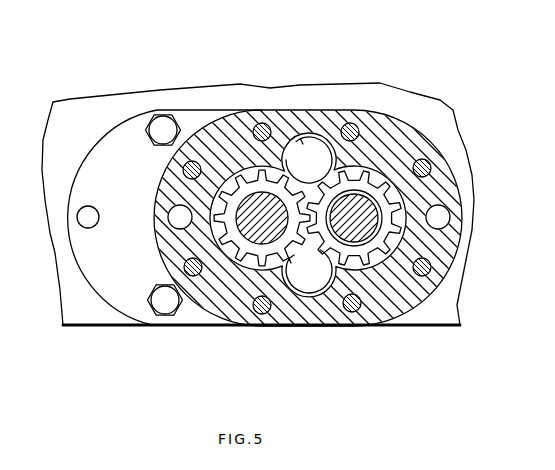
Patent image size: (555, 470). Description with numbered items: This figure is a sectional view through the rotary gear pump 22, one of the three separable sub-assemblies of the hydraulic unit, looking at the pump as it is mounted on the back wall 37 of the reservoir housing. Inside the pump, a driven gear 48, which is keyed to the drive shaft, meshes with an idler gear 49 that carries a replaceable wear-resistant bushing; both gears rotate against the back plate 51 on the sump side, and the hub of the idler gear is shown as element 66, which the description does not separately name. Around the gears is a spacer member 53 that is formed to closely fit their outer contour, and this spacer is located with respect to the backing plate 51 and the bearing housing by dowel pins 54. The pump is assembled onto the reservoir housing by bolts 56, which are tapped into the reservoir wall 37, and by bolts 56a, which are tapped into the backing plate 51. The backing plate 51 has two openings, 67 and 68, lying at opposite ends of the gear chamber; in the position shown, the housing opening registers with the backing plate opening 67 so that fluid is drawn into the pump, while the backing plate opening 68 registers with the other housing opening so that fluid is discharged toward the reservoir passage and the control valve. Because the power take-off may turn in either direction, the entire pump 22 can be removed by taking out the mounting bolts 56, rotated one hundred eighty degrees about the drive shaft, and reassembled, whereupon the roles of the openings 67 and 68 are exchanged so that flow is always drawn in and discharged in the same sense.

The rotary gear pump 22 is at (110, 122).
The back wall 37 is at (427, 113).
The driven gear 48 is at (246, 160).
The idler gear 49 is at (367, 262).
The back plate 51 is at (112, 298).
The spacer member 53 is at (390, 112).
The dowel pins 54 is at (86, 228).
The bolts 56 is at (165, 117).
The bolts 56a is at (256, 124).
The driven gear shaft 66 is at (374, 236).
The backing plate opening 67 is at (305, 285).
The backing plate opening 68 is at (318, 125).